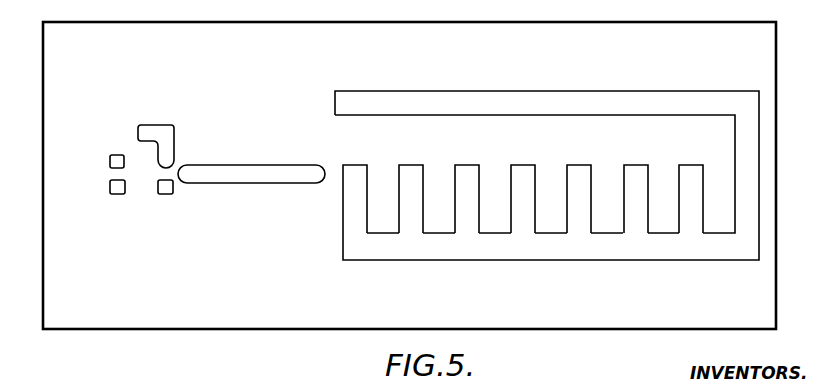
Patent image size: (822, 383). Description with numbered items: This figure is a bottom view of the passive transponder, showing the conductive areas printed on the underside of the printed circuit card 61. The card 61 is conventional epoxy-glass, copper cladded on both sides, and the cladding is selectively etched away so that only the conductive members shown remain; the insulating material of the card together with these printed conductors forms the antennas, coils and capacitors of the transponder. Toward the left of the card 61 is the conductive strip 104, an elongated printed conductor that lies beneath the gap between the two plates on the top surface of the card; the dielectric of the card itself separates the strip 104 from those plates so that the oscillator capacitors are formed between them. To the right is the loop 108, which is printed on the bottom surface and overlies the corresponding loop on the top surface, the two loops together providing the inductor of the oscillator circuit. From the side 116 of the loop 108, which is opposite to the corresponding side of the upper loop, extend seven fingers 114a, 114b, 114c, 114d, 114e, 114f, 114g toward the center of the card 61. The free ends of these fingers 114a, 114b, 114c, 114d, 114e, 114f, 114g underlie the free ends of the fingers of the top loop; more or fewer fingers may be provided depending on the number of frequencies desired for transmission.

The printed circuit card 61 is at (768, 136).
The conductive strip 104 is at (240, 172).
The loop 108 is at (486, 101).
The side 116 is at (532, 251).
The finger 114a is at (691, 173).
The finger 114b is at (636, 173).
The finger 114c is at (579, 173).
The finger 114d is at (525, 173).
The finger 114e is at (467, 173).
The finger 114f is at (410, 173).
The finger 114g is at (355, 173).